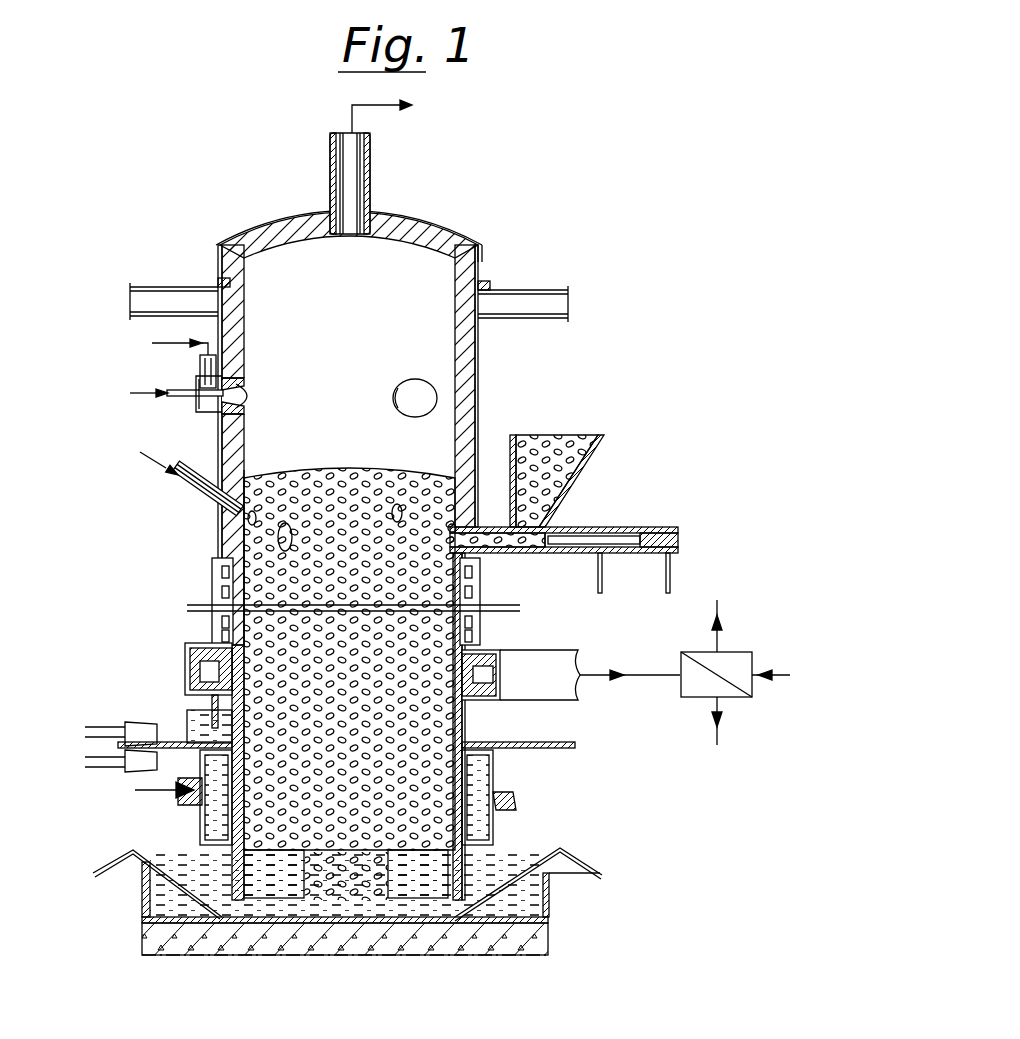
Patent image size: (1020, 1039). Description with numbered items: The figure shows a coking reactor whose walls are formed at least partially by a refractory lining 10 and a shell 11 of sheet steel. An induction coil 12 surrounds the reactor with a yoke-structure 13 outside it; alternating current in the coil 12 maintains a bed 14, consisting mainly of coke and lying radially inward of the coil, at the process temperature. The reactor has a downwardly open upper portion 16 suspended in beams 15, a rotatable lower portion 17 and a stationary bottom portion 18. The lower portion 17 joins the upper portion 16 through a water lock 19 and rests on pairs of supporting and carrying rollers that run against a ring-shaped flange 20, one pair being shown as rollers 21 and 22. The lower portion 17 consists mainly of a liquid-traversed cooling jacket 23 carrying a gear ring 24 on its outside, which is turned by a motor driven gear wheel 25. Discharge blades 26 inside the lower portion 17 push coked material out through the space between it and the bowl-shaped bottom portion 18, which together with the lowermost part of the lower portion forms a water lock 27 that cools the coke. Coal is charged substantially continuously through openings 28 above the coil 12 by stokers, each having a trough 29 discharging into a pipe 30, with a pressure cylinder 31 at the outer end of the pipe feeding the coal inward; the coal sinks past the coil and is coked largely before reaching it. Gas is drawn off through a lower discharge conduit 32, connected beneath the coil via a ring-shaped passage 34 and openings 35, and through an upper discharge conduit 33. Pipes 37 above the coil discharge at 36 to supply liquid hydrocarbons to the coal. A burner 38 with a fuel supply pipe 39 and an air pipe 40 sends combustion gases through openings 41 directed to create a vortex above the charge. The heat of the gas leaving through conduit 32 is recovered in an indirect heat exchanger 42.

The refractory lining 10 is at (467, 368).
The shell 11 is at (468, 245).
The induction coil 12 is at (220, 574).
The yoke-structure 13 is at (212, 623).
The bed 14 is at (280, 577).
The beams 15 is at (155, 293).
The upper portion 16 is at (222, 242).
The lower portion 17 is at (487, 777).
The bottom portion 18 is at (448, 923).
The water lock 19 is at (193, 717).
The ring-shaped flange 20 is at (538, 743).
The supporting roller 21 is at (130, 724).
The carrying roller 22 is at (127, 767).
The cooling jacket 23 is at (487, 833).
The gear ring 24 is at (507, 797).
The motor driven gear wheel 25 is at (170, 797).
The discharge blades 26 is at (283, 892).
The water lock 27 is at (173, 877).
The openings 28 is at (287, 523).
The trough 29 is at (578, 472).
The pipe 30 is at (510, 543).
The pressure cylinder 31 is at (632, 526).
The lower discharge conduit 32 is at (528, 662).
The upper discharge conduit 33 is at (371, 170).
The ring-shaped passage 34 is at (203, 672).
The openings 35 is at (230, 673).
The pipe discharge 36 is at (252, 512).
The pipes 37 is at (187, 489).
The burner 38 is at (210, 408).
The fuel supply pipe 39 is at (170, 385).
The pipe for supplying oxygen-containing gas 40 is at (202, 363).
The openings 41 is at (245, 392).
The indirect heat exchanger 42 is at (695, 653).